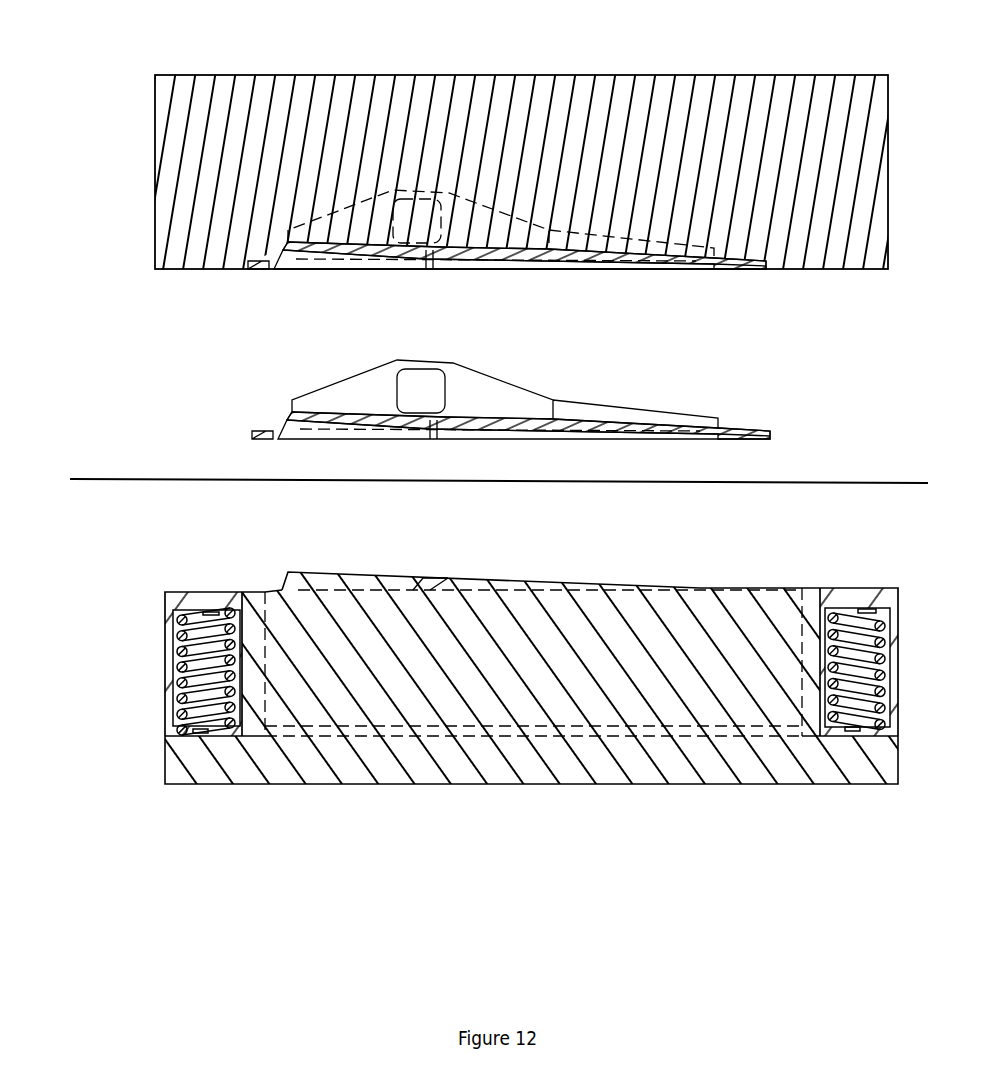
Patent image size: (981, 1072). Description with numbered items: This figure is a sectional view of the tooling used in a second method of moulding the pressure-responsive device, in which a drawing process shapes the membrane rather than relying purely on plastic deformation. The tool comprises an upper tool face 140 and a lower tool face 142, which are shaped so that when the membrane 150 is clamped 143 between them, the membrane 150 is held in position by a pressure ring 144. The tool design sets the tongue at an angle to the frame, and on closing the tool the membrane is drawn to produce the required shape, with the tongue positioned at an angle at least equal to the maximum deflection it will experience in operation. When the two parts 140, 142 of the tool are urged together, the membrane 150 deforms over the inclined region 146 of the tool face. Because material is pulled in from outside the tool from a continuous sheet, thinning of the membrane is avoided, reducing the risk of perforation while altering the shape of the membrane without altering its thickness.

The upper tool face 140 is at (712, 105).
The lower tool face 142 is at (715, 772).
The clamping of the membrane 143 is at (477, 478).
The pressure ring 144 is at (180, 620).
The inclined region 146 is at (278, 585).
The membrane 150 is at (585, 400).